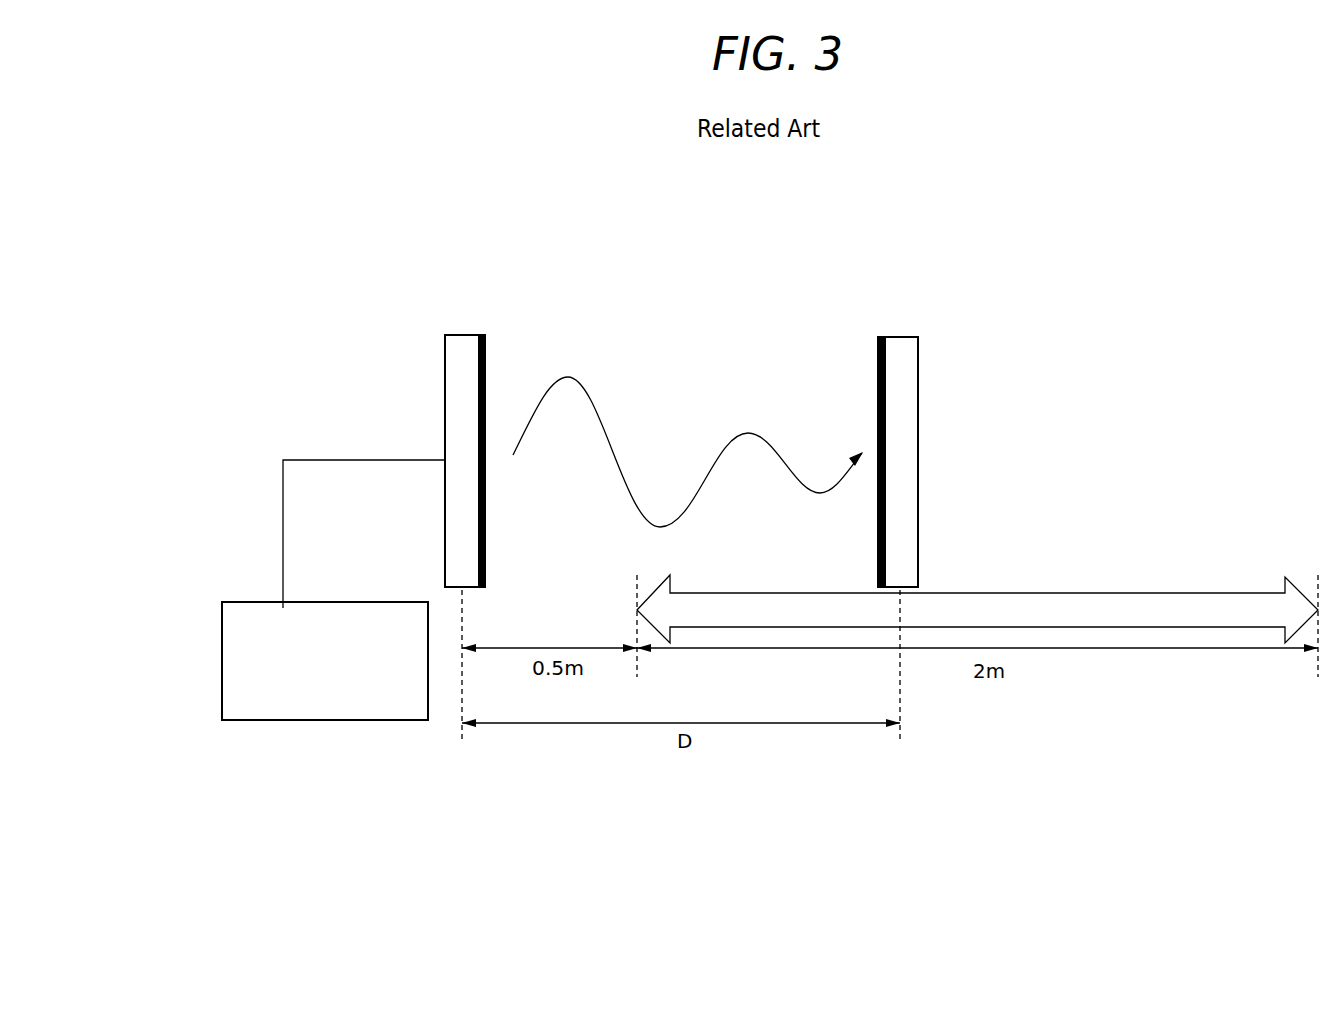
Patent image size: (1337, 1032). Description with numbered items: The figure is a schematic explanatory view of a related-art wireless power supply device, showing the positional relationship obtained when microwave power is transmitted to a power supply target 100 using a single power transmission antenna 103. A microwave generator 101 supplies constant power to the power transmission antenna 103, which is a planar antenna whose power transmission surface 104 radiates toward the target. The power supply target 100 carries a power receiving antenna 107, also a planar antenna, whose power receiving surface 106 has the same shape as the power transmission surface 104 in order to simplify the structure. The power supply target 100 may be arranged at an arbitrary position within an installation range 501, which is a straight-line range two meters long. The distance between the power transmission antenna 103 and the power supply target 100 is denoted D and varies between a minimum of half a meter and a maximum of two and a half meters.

The power supply target 100 is at (911, 318).
The microwave generator 101 is at (310, 720).
The power transmission antenna 103 is at (455, 395).
The power transmission surface 104 is at (485, 345).
The power receiving surface 106 is at (878, 352).
The power receiving antenna 107 is at (878, 337).
The installation range 501 is at (1069, 603).